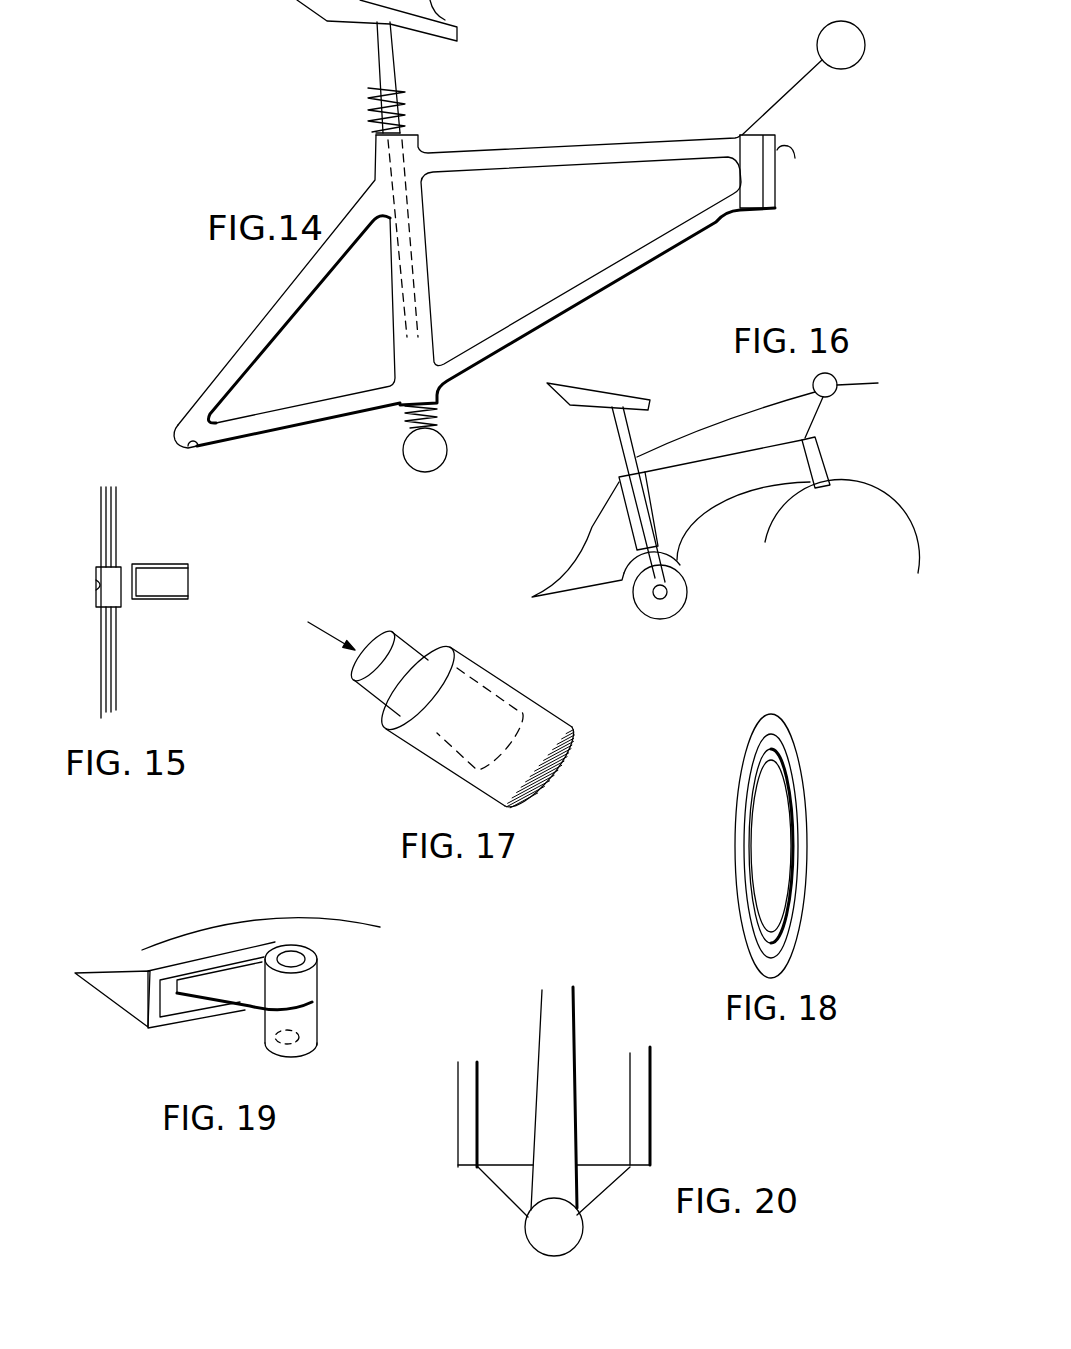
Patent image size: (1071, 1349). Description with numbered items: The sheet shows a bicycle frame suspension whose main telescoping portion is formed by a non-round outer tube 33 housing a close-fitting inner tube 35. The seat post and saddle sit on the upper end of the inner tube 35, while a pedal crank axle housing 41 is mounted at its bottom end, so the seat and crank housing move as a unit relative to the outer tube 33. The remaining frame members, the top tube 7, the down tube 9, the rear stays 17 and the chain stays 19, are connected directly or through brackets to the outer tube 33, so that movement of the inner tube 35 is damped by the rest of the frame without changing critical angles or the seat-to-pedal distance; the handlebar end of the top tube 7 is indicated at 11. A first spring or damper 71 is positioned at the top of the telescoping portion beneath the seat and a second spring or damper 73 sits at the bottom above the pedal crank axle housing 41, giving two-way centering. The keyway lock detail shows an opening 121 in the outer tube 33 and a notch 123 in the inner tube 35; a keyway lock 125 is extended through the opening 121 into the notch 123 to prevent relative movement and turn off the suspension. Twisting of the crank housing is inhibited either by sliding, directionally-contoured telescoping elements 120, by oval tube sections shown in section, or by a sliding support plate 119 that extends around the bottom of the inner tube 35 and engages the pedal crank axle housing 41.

In FIG. 14, the top tube 7 is at (658, 163).
In FIG. 14, the down tube 9 is at (606, 288).
In FIG. 14, the handlebar 11 is at (803, 102).
In FIG. 14, the rear stays 17 is at (317, 290).
In FIG. 14, the chain stays 19 is at (340, 396).
In FIG. 14, the outer tube 33 is at (428, 272).
In FIG. 15, the outer tube 33 is at (117, 528).
In FIG. 19, the outer tube 33 is at (146, 1029).
In FIG. 20, the outer tube 33 is at (578, 1155).
In FIG. 14, the inner tube 35 is at (410, 130).
In FIG. 15, the inner tube 35 is at (113, 501).
In FIG. 20, the inner tube 35 is at (630, 1107).
In FIG. 16, the pedal crank axle housing 41 is at (667, 596).
In FIG. 19, the pedal crank axle housing 41 is at (295, 1044).
In FIG. 20, the pedal crank axle housing 41 is at (525, 1231).
In FIG. 14, the spring or damper 71 is at (408, 109).
In FIG. 14, the spring or damper 73 is at (407, 420).
In FIG. 19, the sliding support plate 119 is at (250, 1014).
In FIG. 20, the sliding support plate 119 is at (613, 1187).
In FIG. 16, the directionally-contoured telescoping elements 120 is at (680, 563).
In FIG. 15, the opening 121 is at (121, 594).
In FIG. 15, the notch 123 is at (97, 586).
In FIG. 15, the keyway lock 125 is at (189, 596).